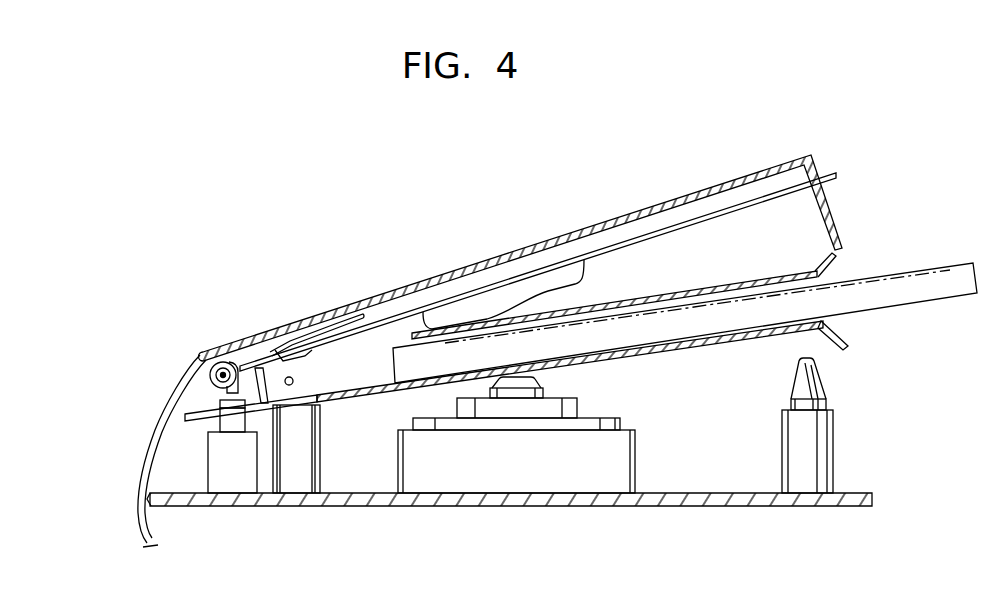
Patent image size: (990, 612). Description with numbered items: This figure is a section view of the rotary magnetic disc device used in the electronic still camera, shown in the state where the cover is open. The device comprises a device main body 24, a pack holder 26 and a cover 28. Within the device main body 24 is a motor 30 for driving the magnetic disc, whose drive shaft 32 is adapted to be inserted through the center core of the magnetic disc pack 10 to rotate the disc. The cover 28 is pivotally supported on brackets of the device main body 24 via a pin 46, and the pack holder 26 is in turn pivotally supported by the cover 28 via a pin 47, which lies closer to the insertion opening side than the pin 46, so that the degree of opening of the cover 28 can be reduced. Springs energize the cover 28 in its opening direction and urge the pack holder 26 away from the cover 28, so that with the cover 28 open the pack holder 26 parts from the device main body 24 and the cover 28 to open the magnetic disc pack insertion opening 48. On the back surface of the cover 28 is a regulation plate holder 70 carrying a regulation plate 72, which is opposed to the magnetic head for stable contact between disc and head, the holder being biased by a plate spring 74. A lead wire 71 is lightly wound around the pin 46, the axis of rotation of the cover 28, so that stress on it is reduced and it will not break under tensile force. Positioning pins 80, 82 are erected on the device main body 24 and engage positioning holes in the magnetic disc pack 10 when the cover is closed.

The magnetic disc pack 10 is at (945, 263).
The device main body 24 is at (683, 508).
The pack holder 26 is at (735, 342).
The cover 28 is at (612, 221).
The motor 30 is at (617, 465).
The drive shaft 32 is at (541, 383).
The pin 46 is at (224, 361).
The pin 47 is at (294, 381).
The magnetic disc pack insertion opening 48 is at (833, 317).
The regulation plate holder 70 is at (742, 206).
The lead wire 71 is at (140, 487).
The regulation plate 72 is at (584, 266).
The plate spring 74 is at (287, 333).
The positioning pin 80 is at (300, 452).
The positioning pin 82 is at (823, 447).